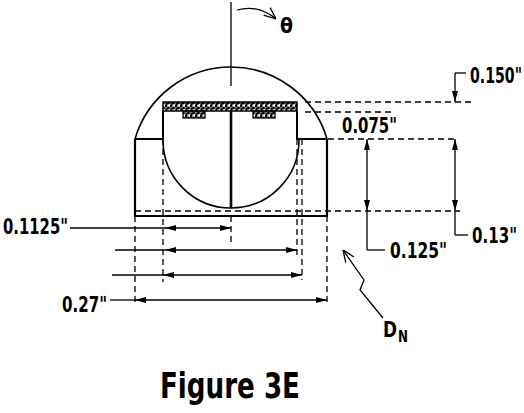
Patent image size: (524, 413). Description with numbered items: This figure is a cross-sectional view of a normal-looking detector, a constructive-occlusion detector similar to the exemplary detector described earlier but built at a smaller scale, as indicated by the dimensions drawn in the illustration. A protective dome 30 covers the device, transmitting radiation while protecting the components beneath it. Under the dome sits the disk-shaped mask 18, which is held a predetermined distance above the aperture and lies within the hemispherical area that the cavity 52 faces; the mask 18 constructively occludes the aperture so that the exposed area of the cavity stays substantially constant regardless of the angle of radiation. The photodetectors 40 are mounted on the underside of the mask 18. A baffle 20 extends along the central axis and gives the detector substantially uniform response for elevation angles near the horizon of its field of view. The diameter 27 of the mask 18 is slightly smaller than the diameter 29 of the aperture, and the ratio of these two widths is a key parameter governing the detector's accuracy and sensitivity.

The protective dome 30 is at (270, 74).
The mask 18 is at (203, 105).
The photodetectors 40 is at (257, 118).
The cavity 52 is at (275, 138).
The baffle 20 is at (231, 178).
The diameter of the mask 27 is at (202, 250).
The diameter of the aperture 29 is at (263, 275).